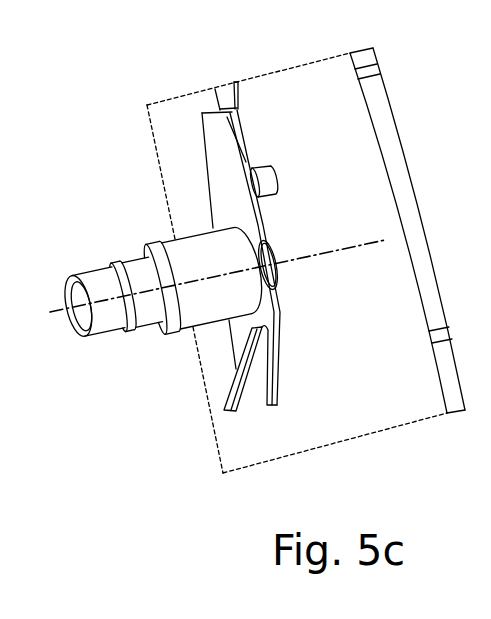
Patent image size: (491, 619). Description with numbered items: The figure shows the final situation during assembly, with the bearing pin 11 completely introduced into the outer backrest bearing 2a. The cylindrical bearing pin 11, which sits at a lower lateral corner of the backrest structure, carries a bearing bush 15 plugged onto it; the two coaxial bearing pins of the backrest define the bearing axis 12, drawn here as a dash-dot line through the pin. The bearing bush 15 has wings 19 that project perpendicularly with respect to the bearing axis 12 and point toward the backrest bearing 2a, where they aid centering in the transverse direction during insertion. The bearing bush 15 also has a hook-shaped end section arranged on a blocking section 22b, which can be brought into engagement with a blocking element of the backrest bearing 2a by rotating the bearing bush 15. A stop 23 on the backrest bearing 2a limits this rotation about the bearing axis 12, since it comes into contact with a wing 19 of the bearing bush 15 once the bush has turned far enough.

The outer backrest bearing 2a is at (390, 397).
The bearing pin 11 is at (82, 272).
The bearing axis 12 is at (345, 249).
The bearing bush 15 is at (228, 207).
The wings 19 is at (236, 370).
The blocking section 22b is at (215, 122).
The stop 23 is at (272, 182).